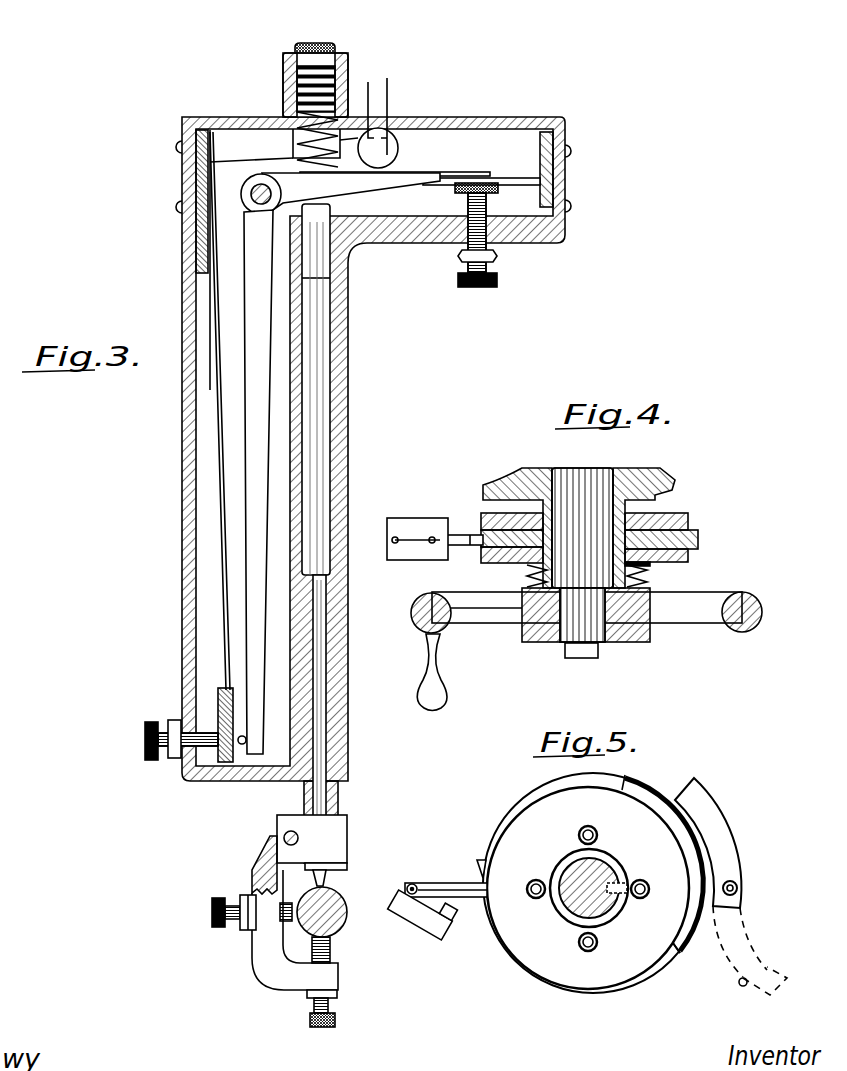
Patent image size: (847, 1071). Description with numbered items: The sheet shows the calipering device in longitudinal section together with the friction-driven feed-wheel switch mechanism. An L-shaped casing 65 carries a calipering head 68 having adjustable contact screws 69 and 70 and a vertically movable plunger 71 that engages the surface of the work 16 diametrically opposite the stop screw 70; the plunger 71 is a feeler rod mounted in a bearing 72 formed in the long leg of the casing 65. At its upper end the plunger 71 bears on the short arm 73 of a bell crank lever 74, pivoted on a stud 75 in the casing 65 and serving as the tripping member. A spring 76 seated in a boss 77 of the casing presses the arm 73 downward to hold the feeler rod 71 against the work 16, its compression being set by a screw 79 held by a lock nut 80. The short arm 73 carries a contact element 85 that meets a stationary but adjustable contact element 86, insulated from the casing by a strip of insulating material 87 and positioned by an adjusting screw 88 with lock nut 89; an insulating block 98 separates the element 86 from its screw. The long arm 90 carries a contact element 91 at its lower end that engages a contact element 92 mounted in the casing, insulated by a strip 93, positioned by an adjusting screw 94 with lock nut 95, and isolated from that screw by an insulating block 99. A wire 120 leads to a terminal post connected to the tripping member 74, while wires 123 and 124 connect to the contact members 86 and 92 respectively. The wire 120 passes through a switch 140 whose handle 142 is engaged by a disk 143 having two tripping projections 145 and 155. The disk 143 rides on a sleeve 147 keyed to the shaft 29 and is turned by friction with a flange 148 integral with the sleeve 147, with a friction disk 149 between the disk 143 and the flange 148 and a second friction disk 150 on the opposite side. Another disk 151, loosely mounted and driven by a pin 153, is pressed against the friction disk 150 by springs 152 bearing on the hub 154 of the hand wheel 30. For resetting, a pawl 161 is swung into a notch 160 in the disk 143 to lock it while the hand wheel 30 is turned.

In FIG. 3, the ball 16 is at (333, 922).
In FIG. 4, the shaft 29 is at (570, 470).
In FIG. 5, the shaft 29 is at (603, 910).
In FIG. 4, the hand wheel 30 is at (752, 636).
In FIG. 3, the L-shaped casing 65 is at (183, 283).
In FIG. 3, the calipering head 68 is at (260, 858).
In FIG. 3, the adjustable contact screw 69 is at (212, 906).
In FIG. 3, the adjustable stop screw 70 is at (310, 1018).
In FIG. 3, the plunger 71 is at (325, 880).
In FIG. 3, the bearing 72 is at (338, 384).
In FIG. 3, the short arm 73 is at (336, 190).
In FIG. 3, the bell crank lever 74 is at (248, 227).
In FIG. 3, the stud 75 is at (257, 187).
In FIG. 3, the spring 76 is at (290, 112).
In FIG. 3, the boss 77 is at (288, 78).
In FIG. 3, the screw 79 is at (305, 44).
In FIG. 3, the lock nut 80 is at (337, 52).
In FIG. 3, the contact element 85 is at (443, 172).
In FIG. 3, the contact element 86 is at (513, 180).
In FIG. 3, the strip of insulating material 87 is at (553, 178).
In FIG. 3, the adjusting screw 88 is at (460, 287).
In FIG. 3, the lock nut 89 is at (497, 262).
In FIG. 3, the long arm 90 is at (253, 542).
In FIG. 3, the contact element 91 is at (242, 745).
In FIG. 3, the contact element 92 is at (228, 652).
In FIG. 3, the strip of insulating material 93 is at (208, 193).
In FIG. 3, the adjusting screw 94 is at (147, 745).
In FIG. 3, the lock nut 95 is at (173, 722).
In FIG. 3, the insulating block 98 is at (497, 193).
In FIG. 3, the insulating block 99 is at (223, 690).
In FIG. 3, the wire 120 is at (390, 78).
In FIG. 3, the wire 123 is at (393, 88).
In FIG. 3, the wire 124 is at (368, 84).
In FIG. 4, the switch 140 is at (403, 525).
In FIG. 5, the switch 140 is at (433, 928).
In FIG. 4, the switch handle 142 is at (397, 543).
In FIG. 5, the switch handle 142 is at (468, 885).
In FIG. 4, the disk 143 is at (693, 537).
In FIG. 5, the disk 143 is at (513, 810).
In FIG. 5, the tripping projection 145 is at (478, 870).
In FIG. 4, the sleeve 147 is at (513, 500).
In FIG. 4, the flange 148 is at (668, 515).
In FIG. 4, the friction disk 149 is at (482, 528).
In FIG. 4, the second friction disk 150 is at (687, 550).
In FIG. 4, the disk 151 is at (642, 562).
In FIG. 5, the disk 151 is at (575, 977).
In FIG. 4, the springs 152 is at (645, 575).
In FIG. 5, the springs 152 is at (640, 878).
In FIG. 4, the pin 153 is at (640, 565).
In FIG. 5, the pin 153 is at (637, 917).
In FIG. 4, the hub 154 is at (537, 597).
In FIG. 5, the tripping projection 155 is at (683, 950).
In FIG. 5, the notch 160 is at (640, 790).
In FIG. 5, the pawl 161 is at (692, 790).